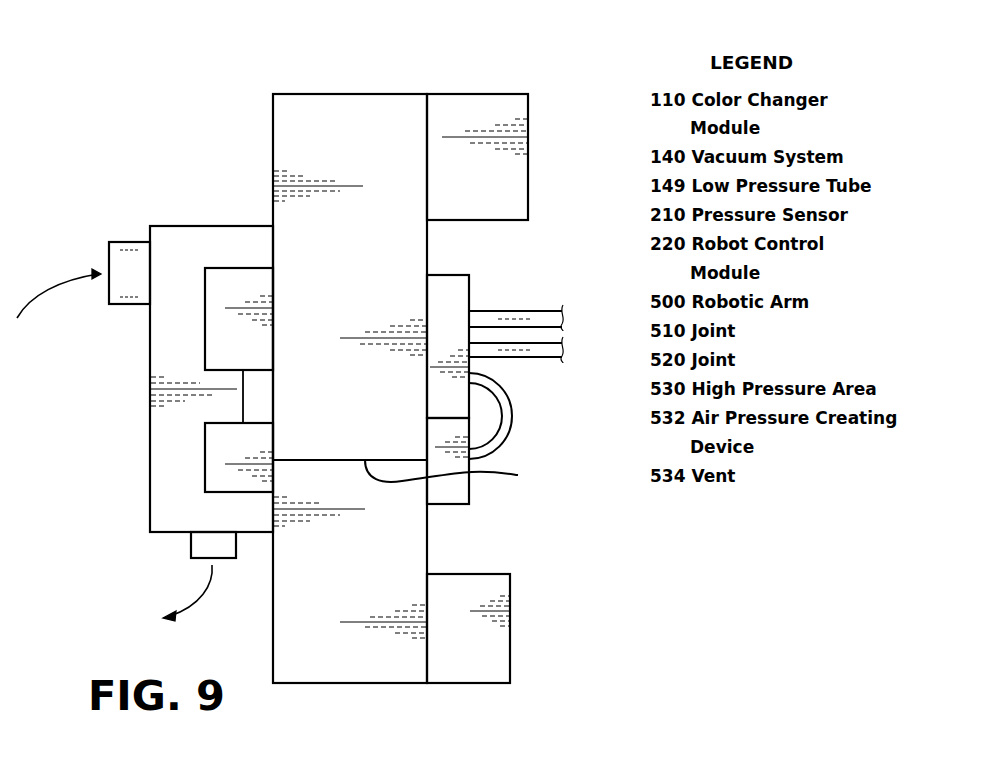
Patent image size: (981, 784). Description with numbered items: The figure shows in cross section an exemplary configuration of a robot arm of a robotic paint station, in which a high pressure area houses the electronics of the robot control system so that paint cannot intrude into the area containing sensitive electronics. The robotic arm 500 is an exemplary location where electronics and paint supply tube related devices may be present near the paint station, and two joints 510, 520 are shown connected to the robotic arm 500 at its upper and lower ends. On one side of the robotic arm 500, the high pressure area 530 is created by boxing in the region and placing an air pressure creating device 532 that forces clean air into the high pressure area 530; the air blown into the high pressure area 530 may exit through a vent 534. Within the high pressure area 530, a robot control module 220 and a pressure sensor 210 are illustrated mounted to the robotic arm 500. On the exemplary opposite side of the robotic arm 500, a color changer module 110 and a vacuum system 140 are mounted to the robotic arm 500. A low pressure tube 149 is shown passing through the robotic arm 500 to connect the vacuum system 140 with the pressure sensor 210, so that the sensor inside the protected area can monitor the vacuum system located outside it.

The color changer module 110 is at (469, 296).
The vacuum system 140 is at (469, 490).
The low pressure tube 149 is at (459, 473).
The pressure sensor 210 is at (205, 458).
The robot control module 220 is at (222, 268).
The robotic arm 500 is at (332, 94).
The joint 510 is at (453, 94).
The joint 520 is at (455, 683).
The high pressure area 530 is at (183, 226).
The air pressure creating device 532 is at (128, 242).
The vent 534 is at (191, 545).